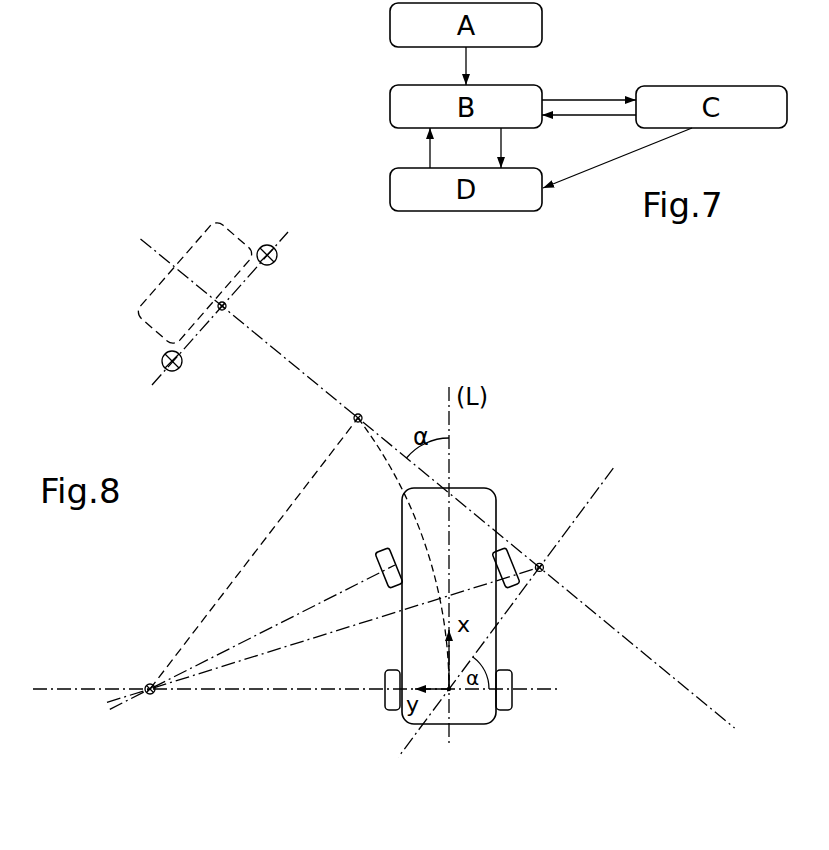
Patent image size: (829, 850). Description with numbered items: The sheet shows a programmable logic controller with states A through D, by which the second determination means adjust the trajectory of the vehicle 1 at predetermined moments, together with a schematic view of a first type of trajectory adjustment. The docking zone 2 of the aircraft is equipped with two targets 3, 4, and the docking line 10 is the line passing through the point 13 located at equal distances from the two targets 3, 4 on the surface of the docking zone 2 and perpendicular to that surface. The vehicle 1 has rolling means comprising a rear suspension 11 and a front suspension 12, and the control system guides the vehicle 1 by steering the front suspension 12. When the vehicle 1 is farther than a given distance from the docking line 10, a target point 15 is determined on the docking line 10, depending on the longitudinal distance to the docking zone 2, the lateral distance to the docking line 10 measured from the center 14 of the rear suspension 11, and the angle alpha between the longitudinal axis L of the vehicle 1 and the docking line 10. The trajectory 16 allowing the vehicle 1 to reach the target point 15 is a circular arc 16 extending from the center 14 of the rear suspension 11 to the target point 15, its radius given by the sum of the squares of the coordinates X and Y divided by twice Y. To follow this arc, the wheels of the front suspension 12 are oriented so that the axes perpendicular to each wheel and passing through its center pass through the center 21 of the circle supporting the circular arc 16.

The vehicle 1 is at (415, 618).
The docking zone 2 is at (135, 334).
The target 3 is at (181, 367).
The target 4 is at (277, 257).
The docking line 10 is at (622, 637).
The rear suspension 11 is at (466, 702).
The front suspension 12 is at (385, 524).
The point 13 is at (224, 312).
The center of the rear suspension 14 is at (457, 700).
The target point 15 is at (358, 413).
The trajectory 16 is at (385, 457).
The center of the circle 21 is at (152, 685).